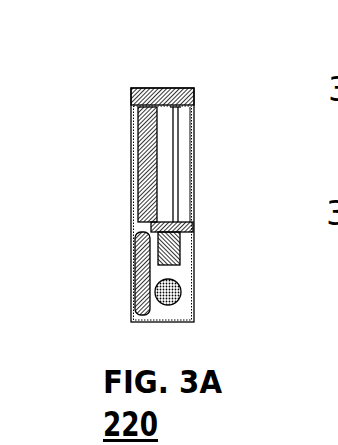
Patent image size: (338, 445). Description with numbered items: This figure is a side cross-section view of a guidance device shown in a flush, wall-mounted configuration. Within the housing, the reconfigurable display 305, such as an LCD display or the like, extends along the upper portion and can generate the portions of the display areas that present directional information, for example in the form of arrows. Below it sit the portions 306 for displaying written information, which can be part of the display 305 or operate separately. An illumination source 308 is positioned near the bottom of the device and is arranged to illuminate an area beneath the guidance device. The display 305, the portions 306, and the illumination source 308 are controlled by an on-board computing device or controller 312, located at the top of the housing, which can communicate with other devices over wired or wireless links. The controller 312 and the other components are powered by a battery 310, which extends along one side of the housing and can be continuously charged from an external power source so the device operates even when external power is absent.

The reconfigurable display 305 is at (175, 165).
The portions for displaying written information 306 is at (181, 248).
The illumination source 308 is at (184, 303).
The battery 310 is at (133, 287).
The controller 312 is at (150, 107).